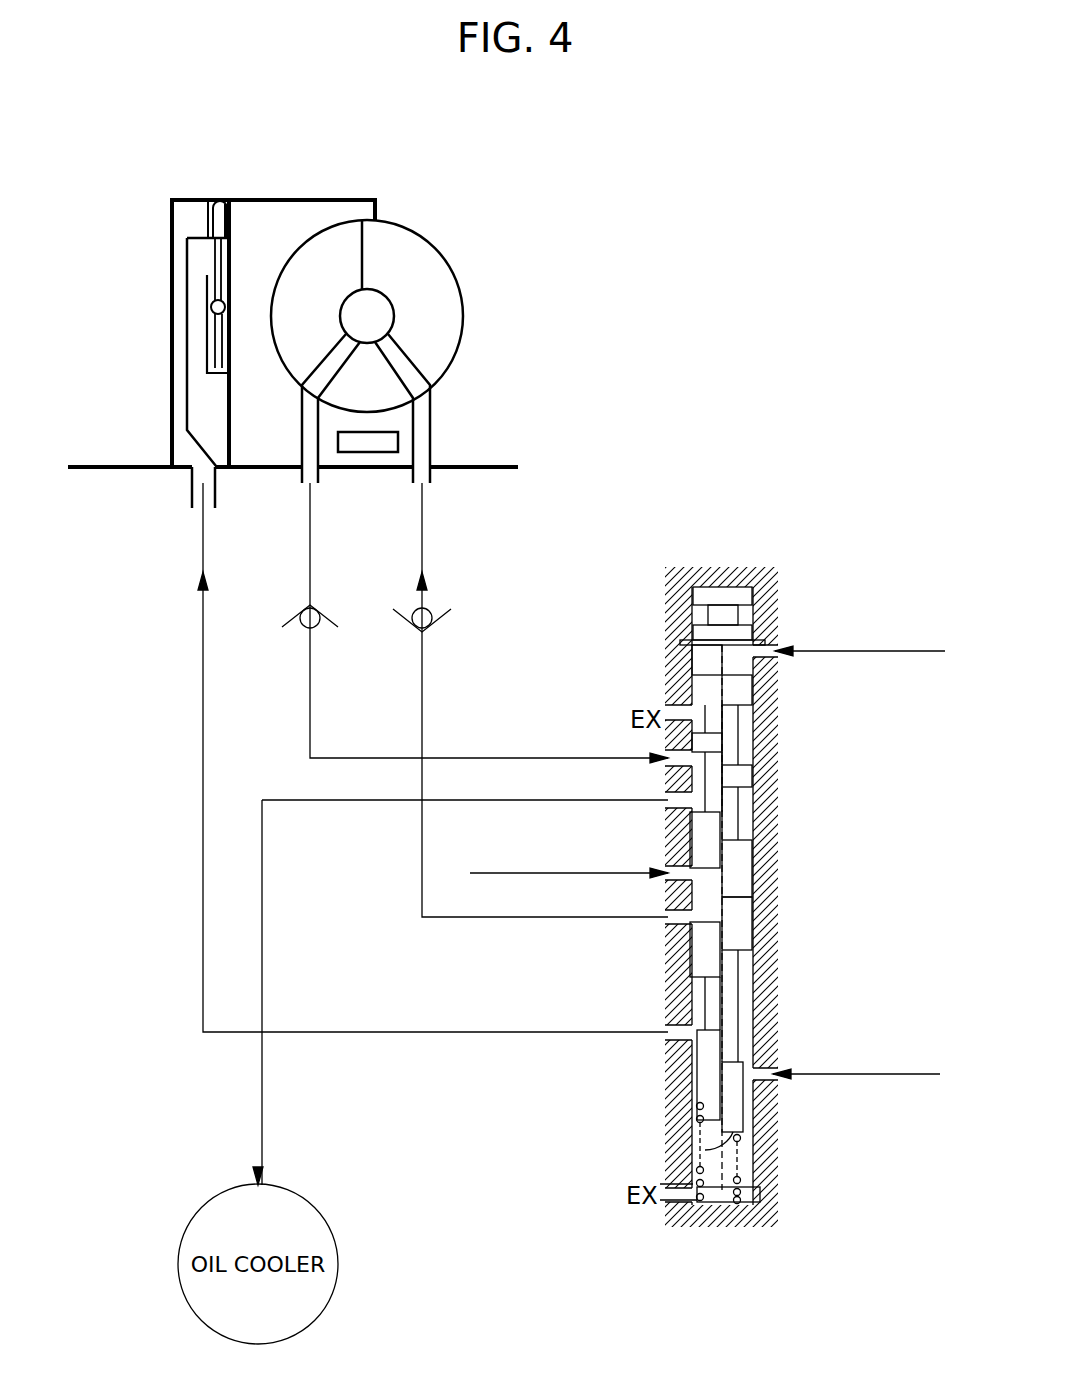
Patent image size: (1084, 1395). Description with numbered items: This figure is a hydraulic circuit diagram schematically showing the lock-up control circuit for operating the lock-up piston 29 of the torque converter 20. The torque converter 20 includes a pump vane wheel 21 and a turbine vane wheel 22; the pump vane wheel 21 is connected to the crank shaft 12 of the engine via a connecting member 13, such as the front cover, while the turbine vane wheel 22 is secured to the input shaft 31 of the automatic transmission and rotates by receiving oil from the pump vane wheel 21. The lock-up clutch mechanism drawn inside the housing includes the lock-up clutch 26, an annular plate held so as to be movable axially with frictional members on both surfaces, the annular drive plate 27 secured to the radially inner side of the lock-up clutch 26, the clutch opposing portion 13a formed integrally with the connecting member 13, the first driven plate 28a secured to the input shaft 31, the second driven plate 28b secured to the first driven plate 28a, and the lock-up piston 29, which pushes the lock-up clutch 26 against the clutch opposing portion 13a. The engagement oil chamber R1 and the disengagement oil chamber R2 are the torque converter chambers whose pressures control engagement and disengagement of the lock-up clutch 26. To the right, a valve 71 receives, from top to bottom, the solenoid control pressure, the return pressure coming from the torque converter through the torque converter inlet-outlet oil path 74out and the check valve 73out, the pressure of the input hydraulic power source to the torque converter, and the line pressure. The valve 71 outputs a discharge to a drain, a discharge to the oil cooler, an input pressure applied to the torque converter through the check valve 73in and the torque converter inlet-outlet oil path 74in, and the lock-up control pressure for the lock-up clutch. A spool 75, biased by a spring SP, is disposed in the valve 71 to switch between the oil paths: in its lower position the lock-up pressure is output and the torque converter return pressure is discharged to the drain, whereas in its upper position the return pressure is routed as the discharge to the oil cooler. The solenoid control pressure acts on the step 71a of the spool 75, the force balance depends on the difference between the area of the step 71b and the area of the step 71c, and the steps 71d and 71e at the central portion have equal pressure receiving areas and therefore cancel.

The crank shaft 12 is at (118, 470).
The connecting member 13 is at (172, 215).
The clutch opposing portion 13a is at (232, 217).
The torque converter 20 is at (365, 286).
The pump vane wheel 21 is at (424, 243).
The turbine vane wheel 22 is at (318, 243).
The lock-up clutch 26 is at (210, 222).
The annular drive plate 27 is at (217, 256).
The first driven plate 28a is at (228, 418).
The second driven plate 28b is at (207, 333).
The lock-up piston 29 is at (187, 282).
The input shaft 31 is at (466, 467).
The valve 71 is at (719, 848).
The step 71a is at (762, 648).
The step 71b is at (672, 988).
The step 71c is at (682, 1035).
The step 71d is at (668, 768).
The step 71e is at (668, 817).
The check valve 73in is at (426, 608).
The check valve 73out is at (303, 628).
The torque converter inlet-outlet oil path 74in is at (425, 535).
The torque converter inlet-outlet oil path 74out is at (312, 535).
The spool 75 is at (742, 866).
The engagement oil chamber R1 is at (178, 360).
The disengagement oil chamber R2 is at (276, 438).
The spring SP is at (733, 1147).